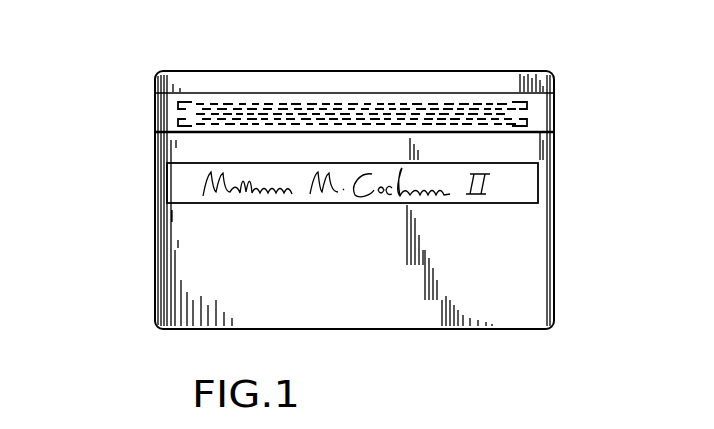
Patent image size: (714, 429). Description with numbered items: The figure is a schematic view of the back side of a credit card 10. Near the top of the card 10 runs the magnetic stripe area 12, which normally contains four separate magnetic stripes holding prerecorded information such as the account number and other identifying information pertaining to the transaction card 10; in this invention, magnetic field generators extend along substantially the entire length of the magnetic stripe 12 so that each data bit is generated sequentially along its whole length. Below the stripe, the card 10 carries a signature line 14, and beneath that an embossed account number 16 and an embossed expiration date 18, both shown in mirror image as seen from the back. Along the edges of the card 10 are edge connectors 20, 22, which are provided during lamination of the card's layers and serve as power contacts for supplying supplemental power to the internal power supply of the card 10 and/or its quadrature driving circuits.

The credit card 10 is at (393, 68).
The magnetic stripe area 12 is at (553, 112).
The signature line 14 is at (173, 188).
The embossed account number 16 is at (191, 238).
The embossed expiration date 18 is at (507, 289).
The edge connector 20 is at (202, 72).
The edge connector 22 is at (468, 330).